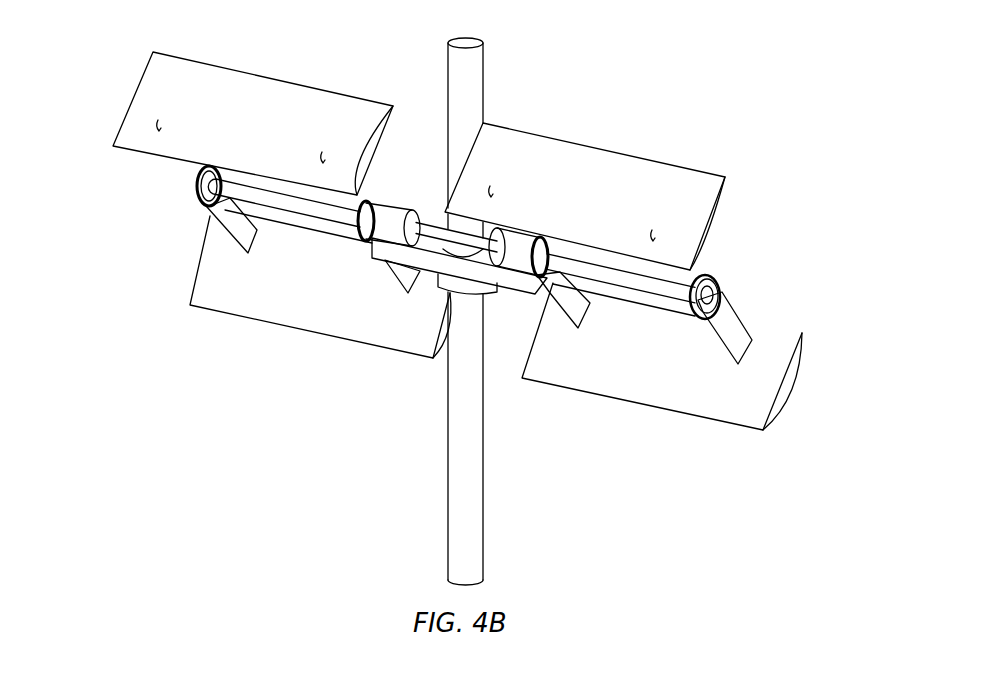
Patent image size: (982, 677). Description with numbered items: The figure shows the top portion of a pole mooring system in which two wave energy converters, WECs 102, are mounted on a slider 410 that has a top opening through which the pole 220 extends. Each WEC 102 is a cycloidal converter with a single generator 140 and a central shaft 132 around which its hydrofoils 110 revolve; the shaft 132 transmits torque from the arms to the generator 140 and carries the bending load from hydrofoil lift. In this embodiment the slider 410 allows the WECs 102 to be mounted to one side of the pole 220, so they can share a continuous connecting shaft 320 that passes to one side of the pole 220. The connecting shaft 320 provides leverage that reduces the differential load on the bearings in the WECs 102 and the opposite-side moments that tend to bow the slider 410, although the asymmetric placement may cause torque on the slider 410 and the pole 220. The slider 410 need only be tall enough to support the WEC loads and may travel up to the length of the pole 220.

The CycWEC 102 is at (184, 235).
The hydrofoils 110 is at (333, 336).
The central shaft 132 is at (280, 209).
The generator 140 is at (395, 211).
The pole 220 is at (484, 522).
The connecting shaft 320 is at (440, 230).
The slider 410 is at (492, 284).